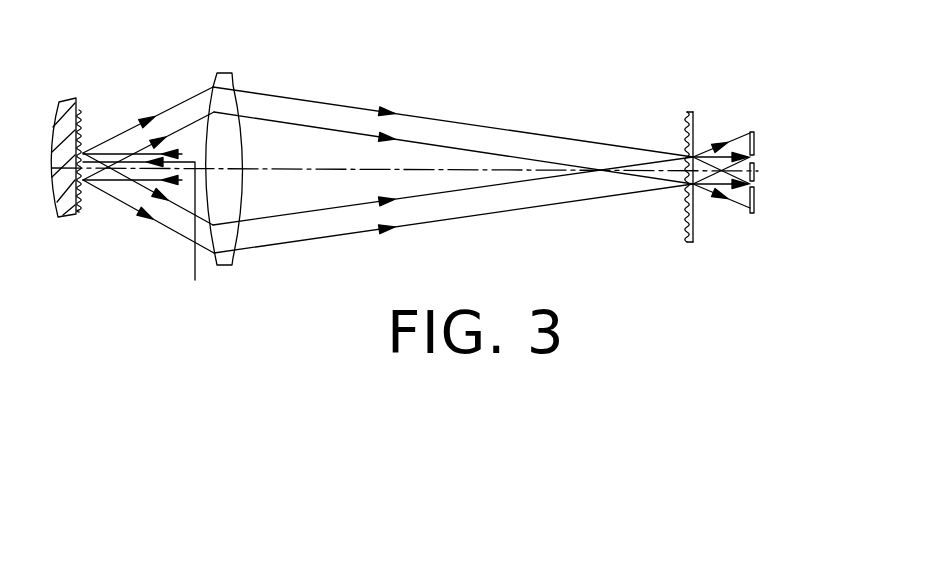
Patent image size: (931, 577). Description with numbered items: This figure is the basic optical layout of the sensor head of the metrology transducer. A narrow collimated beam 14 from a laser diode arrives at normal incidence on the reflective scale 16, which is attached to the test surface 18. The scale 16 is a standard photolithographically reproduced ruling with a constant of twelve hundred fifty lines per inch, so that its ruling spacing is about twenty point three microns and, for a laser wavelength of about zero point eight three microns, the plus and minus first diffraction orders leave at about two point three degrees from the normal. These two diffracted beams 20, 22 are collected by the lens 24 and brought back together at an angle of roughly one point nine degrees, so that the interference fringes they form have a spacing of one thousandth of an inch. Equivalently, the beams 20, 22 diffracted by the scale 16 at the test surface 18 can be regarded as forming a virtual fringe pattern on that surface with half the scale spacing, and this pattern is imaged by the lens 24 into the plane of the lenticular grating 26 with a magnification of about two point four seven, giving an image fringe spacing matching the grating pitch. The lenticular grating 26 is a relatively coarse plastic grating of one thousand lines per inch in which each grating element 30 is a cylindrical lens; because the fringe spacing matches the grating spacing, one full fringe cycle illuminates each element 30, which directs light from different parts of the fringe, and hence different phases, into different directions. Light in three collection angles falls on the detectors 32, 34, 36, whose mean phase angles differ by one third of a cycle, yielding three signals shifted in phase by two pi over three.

The narrow collimated beam 14 is at (194, 265).
The reflective scale 16 is at (95, 115).
The test surface 18 is at (73, 86).
The diffracted beam 20 is at (130, 128).
The diffracted beam 22 is at (122, 200).
The lens 24 is at (233, 262).
The lenticular grating 26 is at (657, 209).
The grating element 30 is at (688, 240).
The detector 32 is at (783, 126).
The detector 34 is at (755, 176).
The detector 36 is at (754, 214).